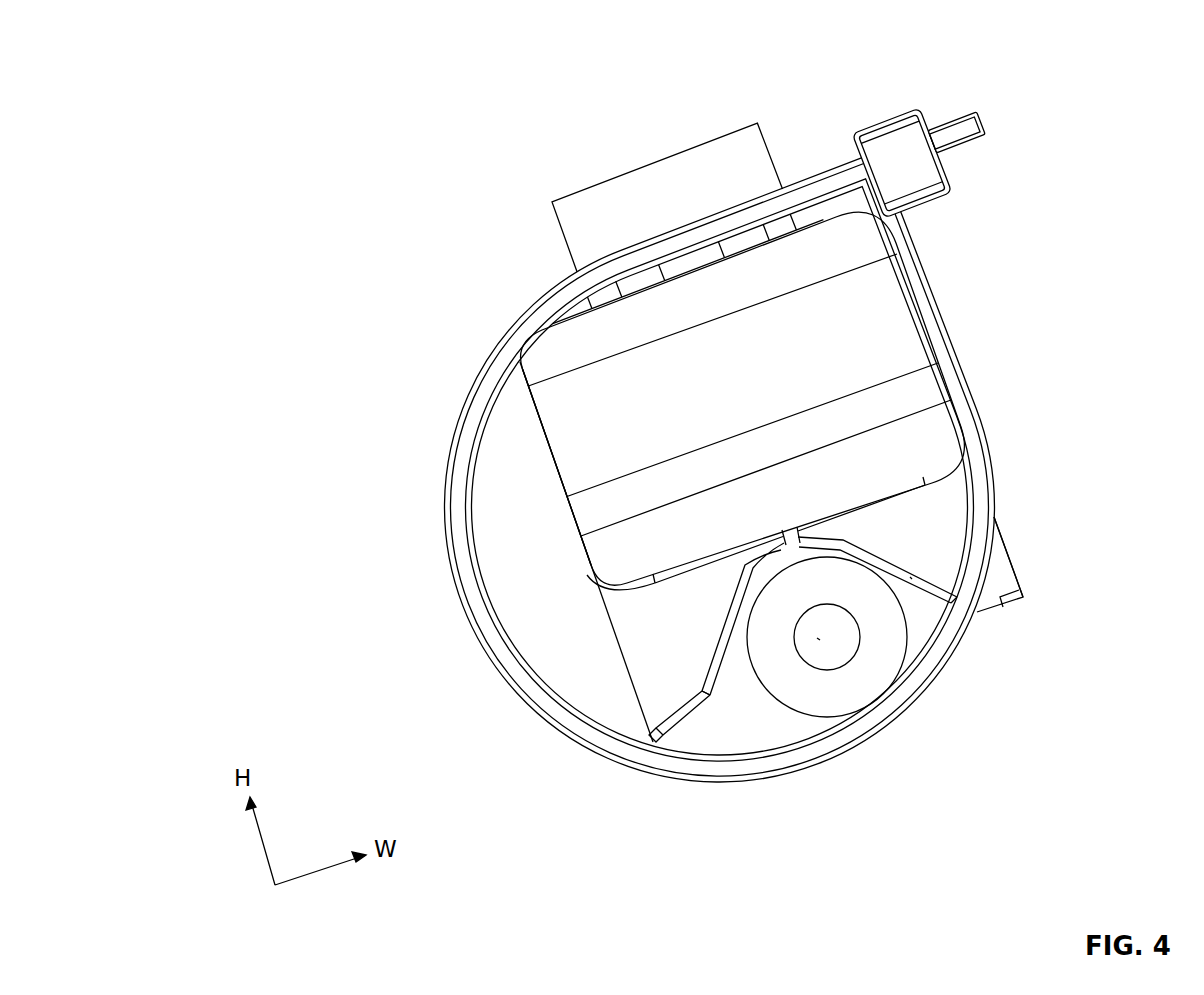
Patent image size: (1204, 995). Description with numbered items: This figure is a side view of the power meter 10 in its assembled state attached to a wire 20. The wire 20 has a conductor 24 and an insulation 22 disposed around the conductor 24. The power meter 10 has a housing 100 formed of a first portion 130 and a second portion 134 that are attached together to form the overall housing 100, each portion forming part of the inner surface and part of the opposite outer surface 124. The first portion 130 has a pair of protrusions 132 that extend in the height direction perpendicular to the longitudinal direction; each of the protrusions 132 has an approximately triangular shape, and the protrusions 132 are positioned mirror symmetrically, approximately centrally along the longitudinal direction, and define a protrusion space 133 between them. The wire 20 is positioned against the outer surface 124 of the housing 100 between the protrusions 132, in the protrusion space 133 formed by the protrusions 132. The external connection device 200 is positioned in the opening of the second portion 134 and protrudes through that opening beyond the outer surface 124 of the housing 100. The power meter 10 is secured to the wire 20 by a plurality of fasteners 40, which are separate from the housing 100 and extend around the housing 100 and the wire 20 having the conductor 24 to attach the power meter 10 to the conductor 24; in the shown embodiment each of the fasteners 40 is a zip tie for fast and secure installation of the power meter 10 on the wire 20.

The power meter 10 is at (350, 102).
The wire 20 is at (905, 642).
The insulation 22 is at (876, 658).
The conductor 24 is at (818, 640).
The fasteners 40 is at (540, 300).
The housing 100 is at (557, 476).
The outer surface 124 is at (910, 577).
The first portion 130 is at (632, 550).
The protrusions 132 is at (1002, 583).
The protrusion space 133 is at (732, 674).
The second portion 134 is at (577, 397).
The external connection device 200 is at (695, 180).